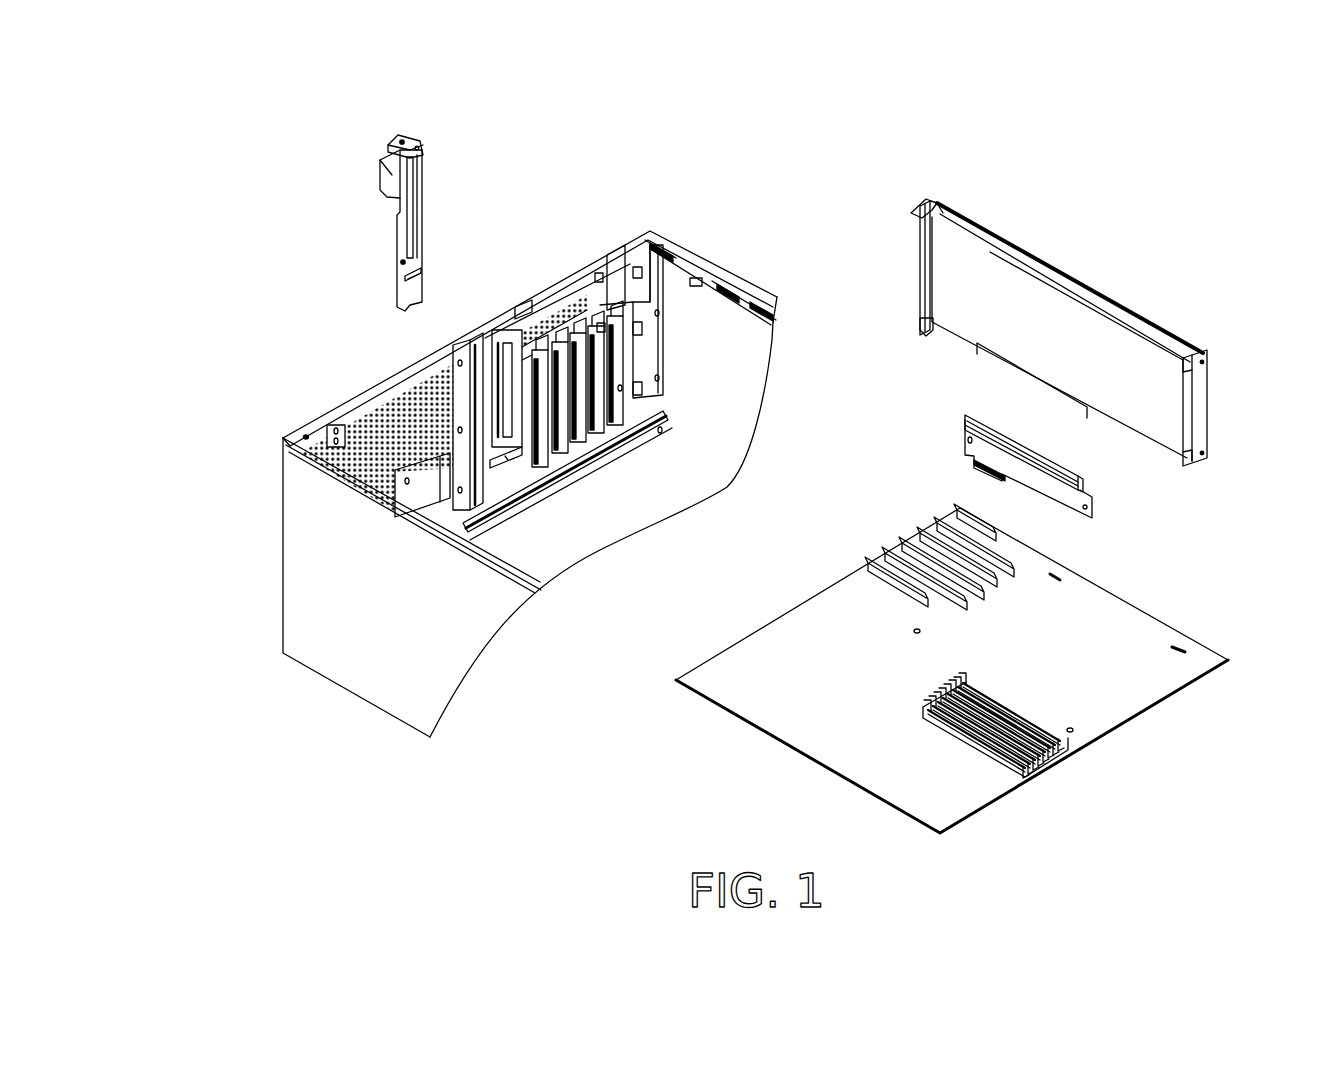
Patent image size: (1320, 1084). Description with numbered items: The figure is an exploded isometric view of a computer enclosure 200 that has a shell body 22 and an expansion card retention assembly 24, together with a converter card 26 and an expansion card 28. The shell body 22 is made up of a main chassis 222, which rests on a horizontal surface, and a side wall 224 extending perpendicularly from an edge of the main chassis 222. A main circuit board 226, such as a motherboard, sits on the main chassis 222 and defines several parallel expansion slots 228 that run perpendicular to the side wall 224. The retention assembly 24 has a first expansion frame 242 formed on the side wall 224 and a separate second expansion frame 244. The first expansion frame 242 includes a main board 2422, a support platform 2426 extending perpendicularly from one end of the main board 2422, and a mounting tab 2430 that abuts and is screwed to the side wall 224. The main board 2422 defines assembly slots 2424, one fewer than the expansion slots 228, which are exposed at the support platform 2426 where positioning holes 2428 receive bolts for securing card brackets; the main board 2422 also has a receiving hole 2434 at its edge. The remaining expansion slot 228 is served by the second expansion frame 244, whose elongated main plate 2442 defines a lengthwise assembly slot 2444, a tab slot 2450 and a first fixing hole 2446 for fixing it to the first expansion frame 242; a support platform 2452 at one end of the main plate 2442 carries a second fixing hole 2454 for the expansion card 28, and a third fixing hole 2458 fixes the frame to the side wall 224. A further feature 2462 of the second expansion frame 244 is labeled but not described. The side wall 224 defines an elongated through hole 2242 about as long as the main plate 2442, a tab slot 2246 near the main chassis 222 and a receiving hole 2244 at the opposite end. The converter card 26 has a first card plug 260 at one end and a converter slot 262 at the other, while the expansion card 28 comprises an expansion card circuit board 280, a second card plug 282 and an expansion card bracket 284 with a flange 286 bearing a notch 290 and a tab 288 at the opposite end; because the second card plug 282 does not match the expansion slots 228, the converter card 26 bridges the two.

The computer enclosure 200 is at (778, 93).
The shell body 22 is at (748, 286).
The main chassis 222 is at (668, 477).
The side wall 224 is at (305, 436).
The through hole 2242 is at (638, 272).
The receiving hole 2244 is at (620, 255).
The tab slot 2246 is at (663, 403).
The support platform 2426 is at (605, 297).
The expansion card retention assembly 24 is at (235, 310).
The first expansion frame 242 is at (418, 337).
The second expansion frame 244 is at (352, 313).
The main board 2422 is at (523, 313).
The assembly slots 2424 is at (520, 362).
The positioning holes 2428 is at (540, 340).
The mounting tab 2430 is at (583, 283).
The receiving hole 2434 is at (622, 389).
The main plate 2442 is at (398, 237).
The assembly slot 2444 is at (414, 204).
The first fixing hole 2446 is at (402, 262).
The tab slot 2450 is at (405, 281).
The support platform 2452 is at (396, 147).
The second fixing hole 2454 is at (420, 146).
The third fixing hole 2458 is at (402, 140).
The side flange 2462 is at (397, 172).
The expansion card 28 is at (1054, 240).
The expansion card circuit board 280 is at (1088, 330).
The second card plug 282 is at (1078, 404).
The expansion card bracket 284 is at (920, 226).
The flange 286 is at (918, 202).
The tab 288 is at (927, 332).
The notch 290 is at (931, 202).
The converter card 26 is at (1047, 490).
The first card plug 260 is at (972, 463).
The converter slot 262 is at (983, 433).
The main circuit board 226 is at (1110, 620).
The expansion slots 228 is at (937, 512).